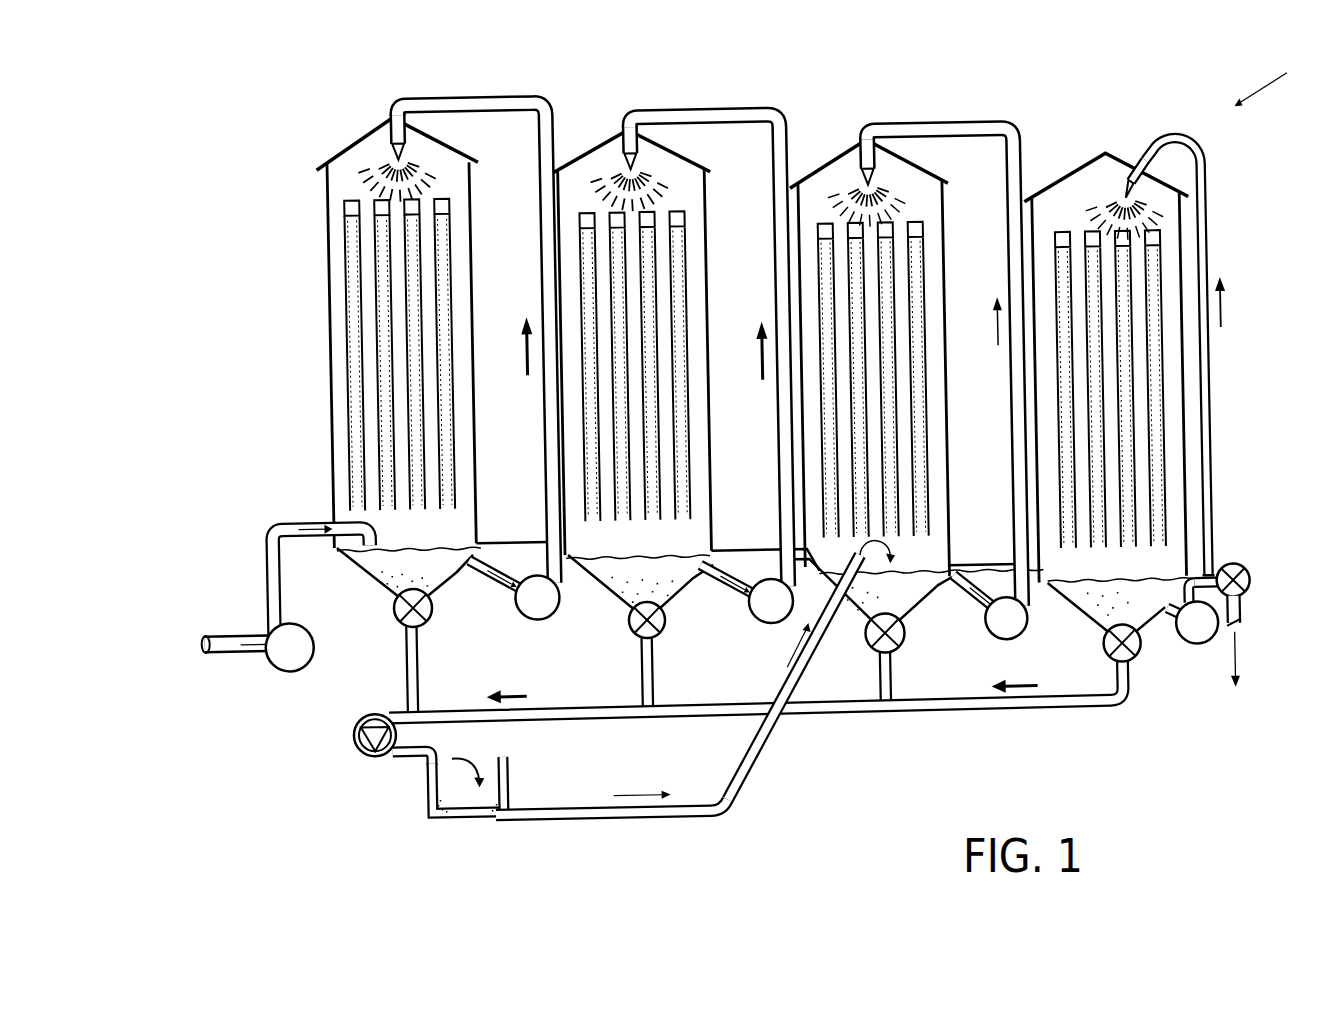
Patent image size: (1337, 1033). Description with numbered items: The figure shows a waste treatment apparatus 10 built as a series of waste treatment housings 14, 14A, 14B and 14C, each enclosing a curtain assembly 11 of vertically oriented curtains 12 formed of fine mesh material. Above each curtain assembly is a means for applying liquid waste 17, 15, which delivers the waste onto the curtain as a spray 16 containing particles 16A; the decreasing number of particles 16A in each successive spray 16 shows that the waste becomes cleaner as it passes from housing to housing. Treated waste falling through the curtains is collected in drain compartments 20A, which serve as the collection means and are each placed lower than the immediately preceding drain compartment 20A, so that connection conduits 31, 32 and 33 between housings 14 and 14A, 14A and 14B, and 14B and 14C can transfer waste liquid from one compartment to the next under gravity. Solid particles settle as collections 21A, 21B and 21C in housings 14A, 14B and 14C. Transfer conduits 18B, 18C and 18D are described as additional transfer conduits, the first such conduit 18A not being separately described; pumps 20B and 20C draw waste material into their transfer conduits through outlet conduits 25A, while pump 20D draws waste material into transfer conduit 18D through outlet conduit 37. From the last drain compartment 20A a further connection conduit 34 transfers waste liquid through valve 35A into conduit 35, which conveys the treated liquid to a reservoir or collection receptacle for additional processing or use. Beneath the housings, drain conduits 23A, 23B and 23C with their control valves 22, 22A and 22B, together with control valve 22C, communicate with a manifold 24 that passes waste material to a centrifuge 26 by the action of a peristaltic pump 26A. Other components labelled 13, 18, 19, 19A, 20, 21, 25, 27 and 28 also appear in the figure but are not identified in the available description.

The waste treatment apparatus 10 is at (1277, 75).
The curtain assembly 11 is at (338, 349).
The curtain 12 is at (345, 398).
The tube inlet heads 13 is at (345, 206).
The housing 14 is at (330, 288).
The housing 14A is at (710, 468).
The housing 14B is at (972, 492).
The housing 14C is at (1187, 250).
The liquid waste applying means 15 is at (405, 150).
The spray 16 is at (440, 186).
The particles 16A is at (350, 190).
The liquid waste applying means 17 is at (392, 150).
The feed line 18 is at (268, 558).
The first vapor duct 18A is at (545, 258).
The transfer conduit 18B is at (778, 258).
The transfer conduit 18C is at (1010, 232).
The transfer conduit 18D is at (1205, 192).
The inlet pipe 19 is at (226, 640).
The transfer pump 19A is at (537, 622).
The feed pump 20 is at (283, 672).
The drain compartment 20A is at (390, 560).
The pump 20B is at (775, 650).
The pump 20C is at (1015, 642).
The pump 20D is at (1208, 630).
The first sump hopper 21 is at (392, 585).
The collection of solid particles 21A is at (603, 588).
The collection of solid particles 21B is at (866, 618).
The collection of solid particles 21C is at (1104, 620).
The control valve 22 is at (398, 618).
The control valve 22A is at (640, 640).
The control valve 22B is at (880, 655).
The control valve 22C is at (1128, 665).
The drain conduit 23A is at (417, 672).
The drain conduit 23B is at (650, 652).
The drain conduit 23C is at (890, 672).
The manifold 24 is at (1097, 700).
The pump outlet pipe 25 is at (415, 760).
The outlet conduit 25A is at (492, 580).
The centrifuge 26 is at (483, 810).
The peristaltic pump 26A is at (355, 748).
The tank bottom 27 is at (443, 815).
The tank outlet pipe 28 is at (665, 818).
The connection conduit 31 is at (513, 540).
The connection conduit 32 is at (748, 548).
The connection conduit 33 is at (980, 562).
The further connection conduit 34 is at (1197, 575).
The conduit 35 is at (1241, 604).
The valve 35A is at (1233, 566).
The outlet conduit 37 is at (1235, 636).